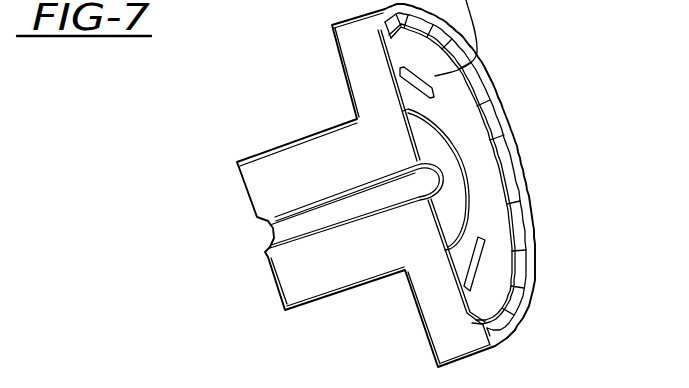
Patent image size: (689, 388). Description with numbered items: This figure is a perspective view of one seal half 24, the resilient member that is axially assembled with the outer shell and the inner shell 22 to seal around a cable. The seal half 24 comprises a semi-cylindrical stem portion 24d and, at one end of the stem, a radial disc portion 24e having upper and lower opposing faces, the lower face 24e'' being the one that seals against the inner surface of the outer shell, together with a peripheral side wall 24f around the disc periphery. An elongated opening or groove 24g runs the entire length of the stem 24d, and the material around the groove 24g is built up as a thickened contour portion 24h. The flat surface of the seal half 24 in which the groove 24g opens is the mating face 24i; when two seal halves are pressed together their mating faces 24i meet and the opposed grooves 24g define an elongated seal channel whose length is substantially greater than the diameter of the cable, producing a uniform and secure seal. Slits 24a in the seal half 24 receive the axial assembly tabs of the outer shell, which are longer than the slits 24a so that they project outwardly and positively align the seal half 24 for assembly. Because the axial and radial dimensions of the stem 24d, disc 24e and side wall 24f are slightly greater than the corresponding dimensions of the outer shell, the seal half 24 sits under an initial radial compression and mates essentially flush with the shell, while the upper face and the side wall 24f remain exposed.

The inner shell 22 is at (132, 387).
The seal half 24 is at (252, 244).
The slits 24a is at (481, 237).
The semi-cylindrical stem portion 24d is at (277, 148).
The radial disc portion 24e is at (312, 39).
The lower face 24e'' is at (394, 200).
The peripheral side wall 24f is at (530, 266).
The groove 24g is at (313, 238).
The thickened contour portion 24h is at (415, 145).
The mating face 24i is at (262, 188).